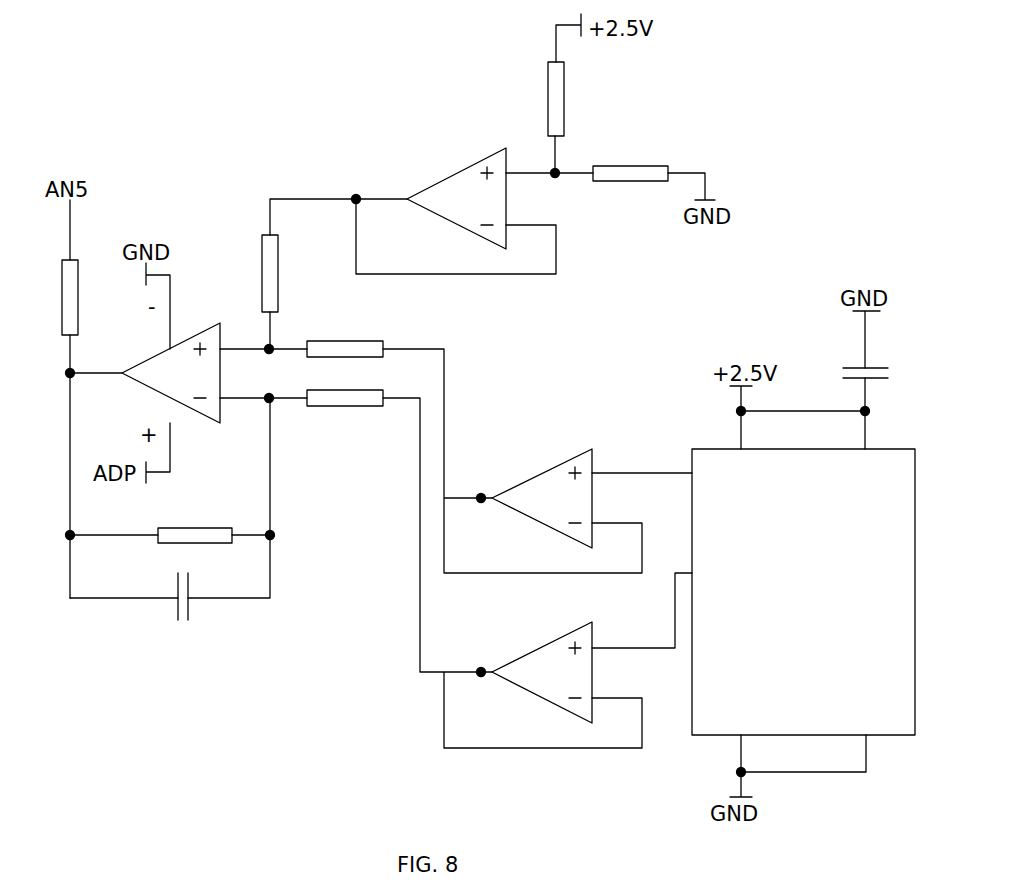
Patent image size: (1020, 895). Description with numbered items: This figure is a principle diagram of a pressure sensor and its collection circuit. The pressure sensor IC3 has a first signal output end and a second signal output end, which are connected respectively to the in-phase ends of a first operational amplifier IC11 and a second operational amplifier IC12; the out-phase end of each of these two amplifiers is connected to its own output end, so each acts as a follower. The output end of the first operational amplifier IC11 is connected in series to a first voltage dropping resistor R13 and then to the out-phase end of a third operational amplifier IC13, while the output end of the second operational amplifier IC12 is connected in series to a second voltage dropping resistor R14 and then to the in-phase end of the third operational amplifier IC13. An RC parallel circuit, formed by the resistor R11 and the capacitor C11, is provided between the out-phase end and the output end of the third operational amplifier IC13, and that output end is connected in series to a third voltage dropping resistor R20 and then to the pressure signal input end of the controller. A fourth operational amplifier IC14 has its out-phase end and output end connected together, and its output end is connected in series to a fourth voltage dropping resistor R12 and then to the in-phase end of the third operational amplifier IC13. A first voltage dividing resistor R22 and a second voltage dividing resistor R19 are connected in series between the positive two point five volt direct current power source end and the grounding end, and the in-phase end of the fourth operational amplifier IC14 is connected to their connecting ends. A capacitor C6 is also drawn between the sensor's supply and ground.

The third voltage dropping resistor R20 is at (66, 298).
The fourth voltage dropping resistor R12 is at (292, 273).
The second voltage dropping resistor R14 is at (346, 338).
The first voltage dropping resistor R13 is at (345, 401).
The resistor R11 is at (185, 523).
The first voltage dividing resistor R22 is at (580, 99).
The second voltage dividing resistor R19 is at (628, 176).
The capacitor C11 is at (188, 599).
The capacitor C6 (104) C6 is at (885, 386).
The third operational amplifier IC13 is at (171, 373).
The fourth operational amplifier IC14 is at (456, 198).
The second operational amplifier IC12 is at (542, 498).
The first operational amplifier IC11 is at (542, 672).
The pressure sensor IC3 is at (803, 592).